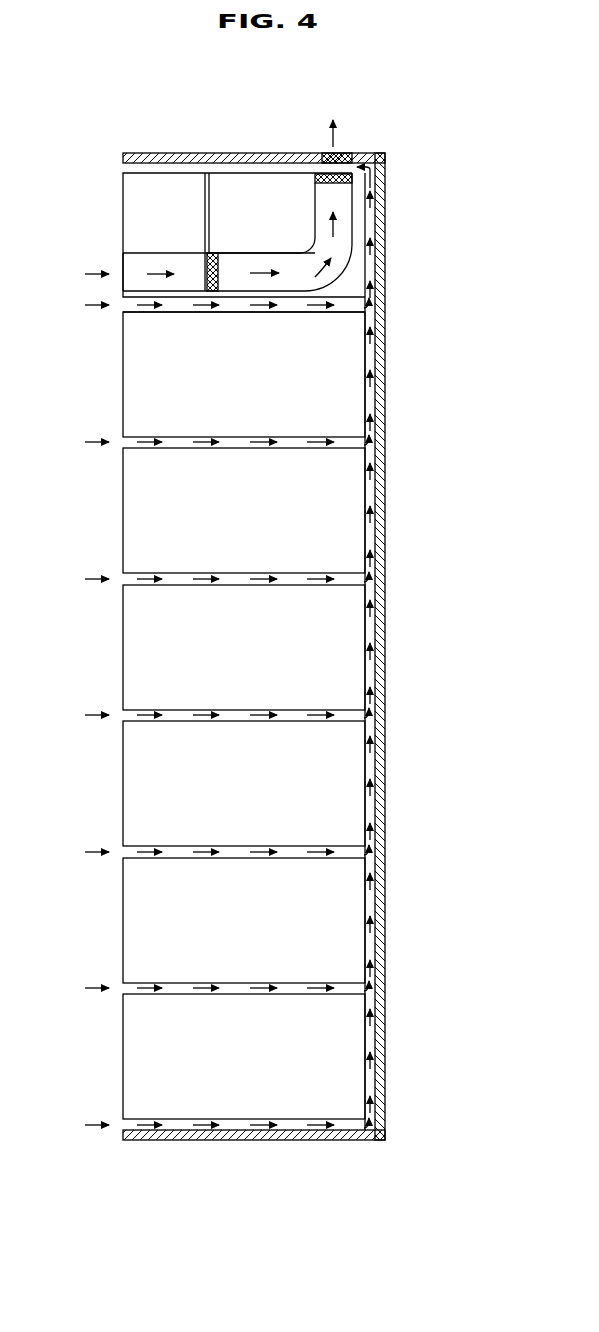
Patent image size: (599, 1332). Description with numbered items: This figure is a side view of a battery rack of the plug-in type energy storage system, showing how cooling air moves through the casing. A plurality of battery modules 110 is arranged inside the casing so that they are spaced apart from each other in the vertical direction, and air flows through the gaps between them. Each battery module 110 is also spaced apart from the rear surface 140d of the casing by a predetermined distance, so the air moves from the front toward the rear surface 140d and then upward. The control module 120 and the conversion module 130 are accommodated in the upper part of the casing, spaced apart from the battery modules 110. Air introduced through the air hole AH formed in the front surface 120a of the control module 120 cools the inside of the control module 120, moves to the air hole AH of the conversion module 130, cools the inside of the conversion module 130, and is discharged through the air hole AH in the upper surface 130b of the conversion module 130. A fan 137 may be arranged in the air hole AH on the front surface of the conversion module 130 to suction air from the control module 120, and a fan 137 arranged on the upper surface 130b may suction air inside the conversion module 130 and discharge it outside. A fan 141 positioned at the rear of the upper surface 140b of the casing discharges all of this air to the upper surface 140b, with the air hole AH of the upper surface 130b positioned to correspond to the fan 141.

The battery module 110 is at (343, 359).
The control module 120 is at (153, 188).
The front surface of the control module 120a is at (123, 222).
The conversion module 130 is at (287, 190).
The upper surface of the conversion module 130b is at (243, 173).
The fan 137 is at (207, 275).
The upper surface of the casing 140b is at (155, 153).
The rear surface of the casing 140d is at (380, 228).
The fan 141 is at (333, 153).
The air hole AH is at (128, 268).